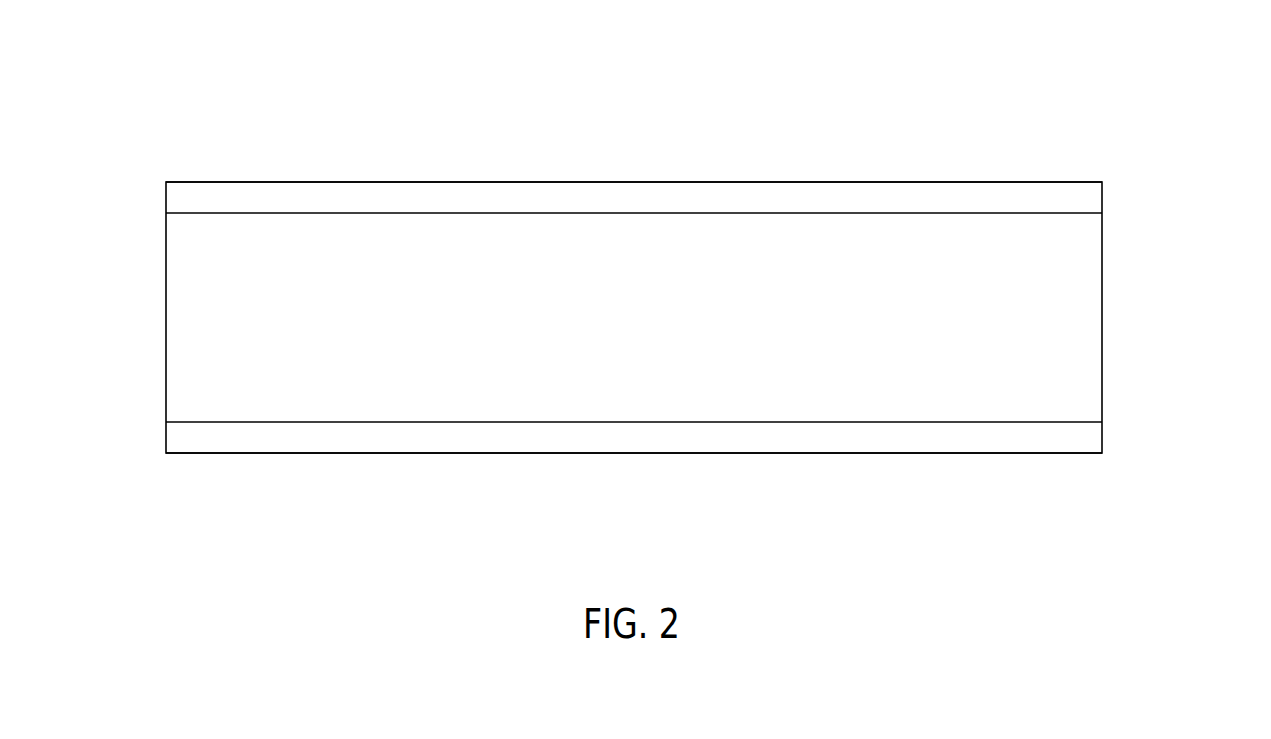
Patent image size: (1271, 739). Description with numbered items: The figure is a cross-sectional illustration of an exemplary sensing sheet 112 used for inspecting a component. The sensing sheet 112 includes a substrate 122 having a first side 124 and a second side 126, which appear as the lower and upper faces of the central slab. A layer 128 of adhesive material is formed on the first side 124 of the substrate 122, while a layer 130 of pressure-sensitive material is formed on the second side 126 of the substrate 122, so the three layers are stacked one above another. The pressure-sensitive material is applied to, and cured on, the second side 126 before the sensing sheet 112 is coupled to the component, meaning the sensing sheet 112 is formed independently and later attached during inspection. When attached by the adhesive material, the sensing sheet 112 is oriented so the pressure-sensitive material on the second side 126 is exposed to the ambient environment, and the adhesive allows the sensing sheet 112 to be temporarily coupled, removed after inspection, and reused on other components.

The sensing sheet 112 is at (1146, 86).
The substrate 122 is at (1102, 318).
The first side 124 is at (1027, 513).
The second side 126 is at (995, 139).
The layer of adhesive material 128 is at (1102, 438).
The layer of pressure-sensitive material 130 is at (1102, 196).